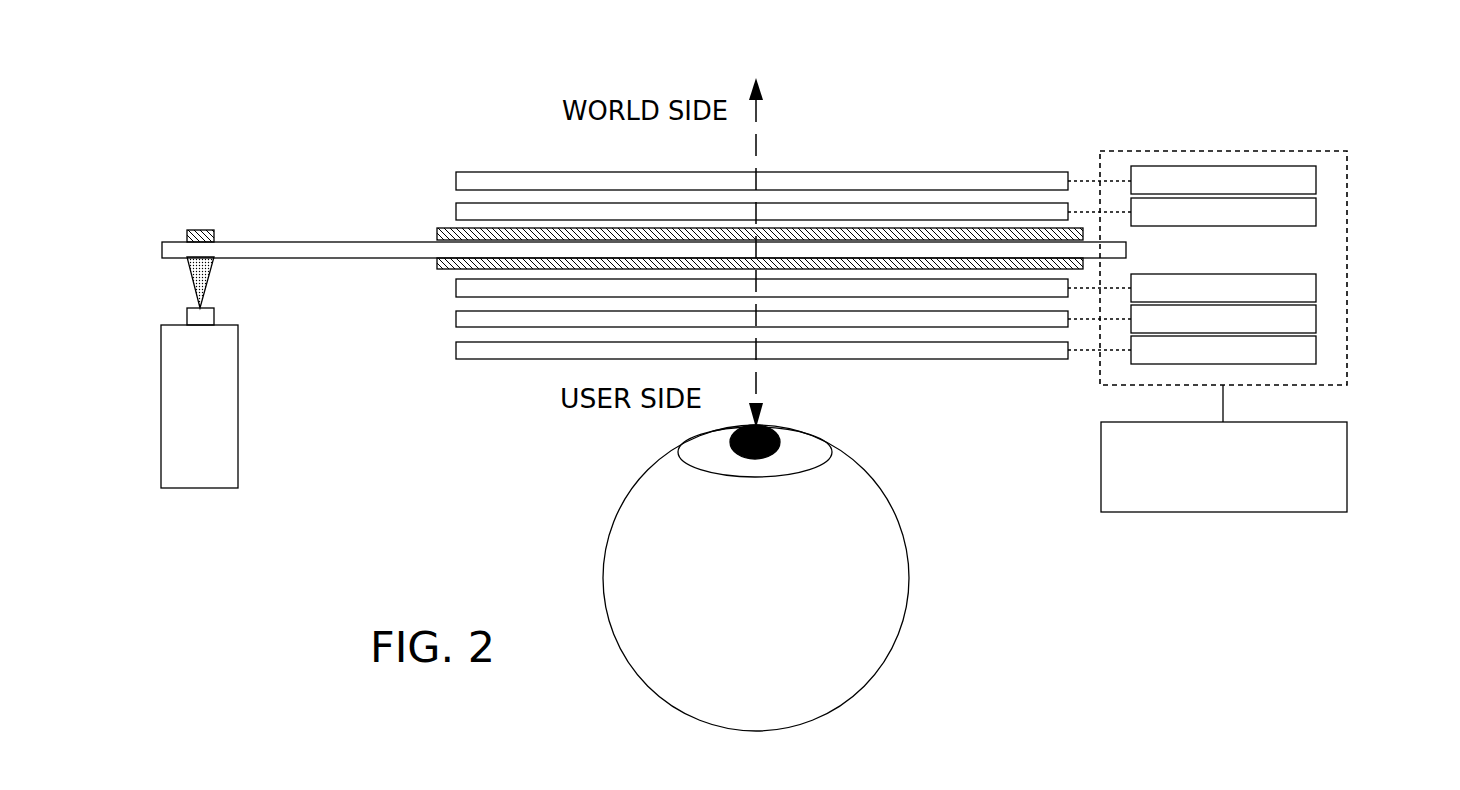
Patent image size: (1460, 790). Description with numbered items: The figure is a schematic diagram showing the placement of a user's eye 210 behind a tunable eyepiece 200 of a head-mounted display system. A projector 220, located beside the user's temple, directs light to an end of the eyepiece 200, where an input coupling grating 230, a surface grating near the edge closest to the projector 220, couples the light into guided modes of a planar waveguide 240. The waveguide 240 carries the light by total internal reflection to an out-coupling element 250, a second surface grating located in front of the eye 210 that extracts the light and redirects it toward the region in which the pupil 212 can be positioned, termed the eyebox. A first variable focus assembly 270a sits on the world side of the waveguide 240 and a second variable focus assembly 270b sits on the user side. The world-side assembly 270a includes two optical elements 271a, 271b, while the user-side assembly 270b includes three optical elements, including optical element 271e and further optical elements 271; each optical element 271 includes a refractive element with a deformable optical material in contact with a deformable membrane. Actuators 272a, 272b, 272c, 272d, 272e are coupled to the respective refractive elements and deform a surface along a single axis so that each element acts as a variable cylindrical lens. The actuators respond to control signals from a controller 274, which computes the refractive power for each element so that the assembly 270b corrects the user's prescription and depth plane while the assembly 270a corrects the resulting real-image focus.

The eyepiece 200 is at (955, 97).
The eye 210 is at (789, 578).
The pupil 212 is at (778, 440).
The projector 220 is at (222, 409).
The input coupling grating 230 is at (187, 230).
The planar waveguide 240 is at (162, 246).
The out-coupling element 250 is at (437, 232).
The first variable focus assembly 270a is at (652, 132).
The second variable focus assembly 270b is at (670, 367).
The optical element 271a is at (456, 181).
The optical element 271b is at (456, 212).
The optical element 271 is at (456, 288).
The optical element 271e is at (456, 350).
The actuator 272a is at (1316, 180).
The actuator 272b is at (1316, 212).
The actuator 272c is at (1316, 288).
The actuator 272d is at (1316, 319).
The actuator 272e is at (1316, 350).
The controller 274 is at (1332, 470).